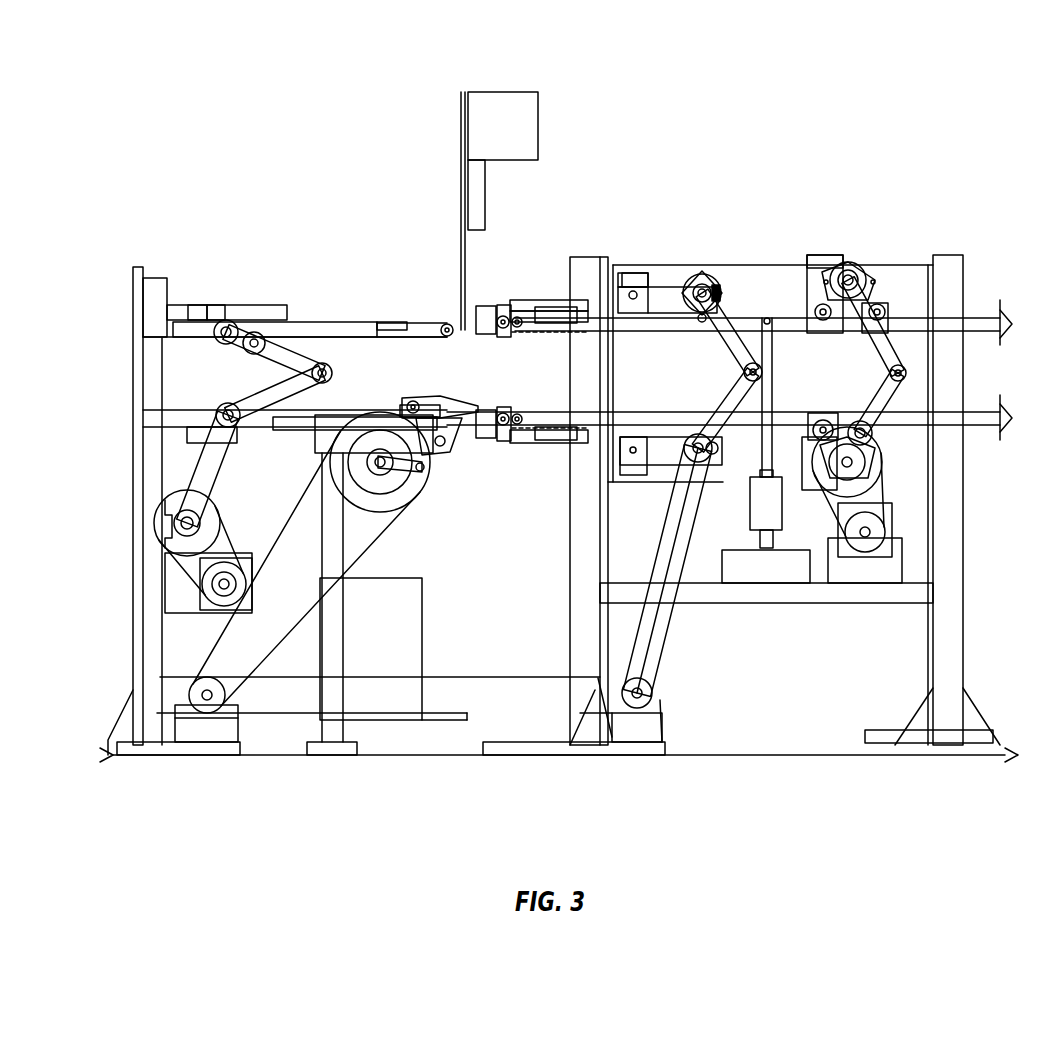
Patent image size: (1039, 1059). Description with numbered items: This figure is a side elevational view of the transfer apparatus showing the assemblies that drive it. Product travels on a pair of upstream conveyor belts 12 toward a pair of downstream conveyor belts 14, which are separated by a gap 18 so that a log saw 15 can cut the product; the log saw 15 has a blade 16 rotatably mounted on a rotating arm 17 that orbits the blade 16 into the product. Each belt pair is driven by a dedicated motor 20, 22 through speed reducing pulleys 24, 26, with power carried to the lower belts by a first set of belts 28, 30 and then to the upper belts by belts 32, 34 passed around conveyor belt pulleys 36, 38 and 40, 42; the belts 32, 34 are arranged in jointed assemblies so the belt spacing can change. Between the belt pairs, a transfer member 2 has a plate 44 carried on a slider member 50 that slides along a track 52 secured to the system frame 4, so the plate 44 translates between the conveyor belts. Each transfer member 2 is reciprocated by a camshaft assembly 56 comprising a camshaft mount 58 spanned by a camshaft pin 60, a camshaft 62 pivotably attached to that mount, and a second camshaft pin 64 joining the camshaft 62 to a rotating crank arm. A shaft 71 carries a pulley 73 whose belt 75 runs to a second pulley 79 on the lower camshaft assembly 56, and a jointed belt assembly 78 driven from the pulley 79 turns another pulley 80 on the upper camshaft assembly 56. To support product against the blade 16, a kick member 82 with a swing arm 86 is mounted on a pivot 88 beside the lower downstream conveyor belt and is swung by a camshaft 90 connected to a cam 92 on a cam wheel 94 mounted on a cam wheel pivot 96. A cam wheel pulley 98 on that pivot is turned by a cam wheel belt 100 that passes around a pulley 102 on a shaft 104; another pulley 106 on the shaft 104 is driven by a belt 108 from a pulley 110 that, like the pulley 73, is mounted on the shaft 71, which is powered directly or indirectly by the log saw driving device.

The transfer member 2 is at (512, 300).
The system frame 4 is at (588, 268).
The upstream conveyor belts 12 is at (645, 420).
The downstream conveyor belts 14 is at (214, 340).
The log saw 15 is at (520, 98).
The blade 16 is at (458, 270).
The rotating arm 17 is at (478, 200).
The gap 18 is at (450, 318).
The motor 20 is at (883, 530).
The motor 22 is at (200, 570).
The speed reducing pulley 24 is at (882, 460).
The speed reducing pulley 26 is at (160, 518).
The belt 28 is at (885, 490).
The belt 30 is at (180, 485).
The belt 32 is at (878, 412).
The belt 34 is at (276, 374).
The conveyor belt pulley 36 is at (840, 420).
The conveyor belt pulley 38 is at (238, 430).
The conveyor belt pulley 40 is at (862, 262).
The conveyor belt pulley 42 is at (232, 318).
The plate 44 is at (472, 340).
The slider member 50 is at (556, 425).
The track 52 is at (545, 300).
The camshaft assembly 56 is at (658, 275).
The camshaft mount 58 is at (633, 292).
The camshaft pin 60 is at (636, 274).
The camshaft 62 is at (700, 275).
The second camshaft pin 64 is at (720, 300).
The shaft 71 is at (652, 695).
The pulley 73 is at (655, 670).
The belt 75 is at (668, 640).
The jointed belt assembly 78 is at (742, 376).
The second pulley 79 is at (705, 462).
The pulley 80 is at (720, 405).
The kick member 82 is at (400, 380).
The swing arm 86 is at (445, 398).
The pivot 88 is at (405, 404).
The camshaft 90 is at (444, 432).
The cam 92 is at (398, 506).
The cam wheel 94 is at (408, 495).
The cam wheel pivot 96 is at (410, 485).
The cam wheel pulley 98 is at (363, 468).
The cam wheel belt 100 is at (320, 630).
The pulley 102 is at (192, 740).
The shaft 104 is at (215, 700).
The pulley 106 is at (228, 688).
The belt 108 is at (383, 720).
The pulley 110 is at (655, 700).